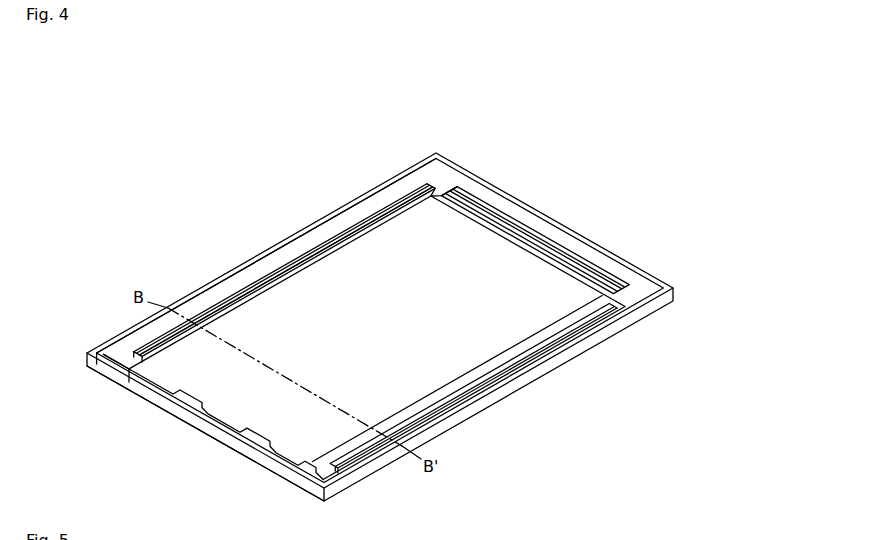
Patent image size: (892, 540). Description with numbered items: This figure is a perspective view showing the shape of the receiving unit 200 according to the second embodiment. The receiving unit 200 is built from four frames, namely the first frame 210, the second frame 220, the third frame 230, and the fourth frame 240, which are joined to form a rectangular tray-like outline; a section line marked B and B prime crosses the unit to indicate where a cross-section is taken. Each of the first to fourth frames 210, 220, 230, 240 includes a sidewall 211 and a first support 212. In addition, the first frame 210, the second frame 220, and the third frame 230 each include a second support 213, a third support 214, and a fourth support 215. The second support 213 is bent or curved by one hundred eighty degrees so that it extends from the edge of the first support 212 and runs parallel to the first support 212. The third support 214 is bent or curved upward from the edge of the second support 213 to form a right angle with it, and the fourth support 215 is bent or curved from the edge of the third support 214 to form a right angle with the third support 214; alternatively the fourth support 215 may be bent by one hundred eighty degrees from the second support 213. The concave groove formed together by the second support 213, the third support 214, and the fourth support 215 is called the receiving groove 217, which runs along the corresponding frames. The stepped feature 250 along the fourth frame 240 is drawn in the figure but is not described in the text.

The receiving unit 200 is at (522, 104).
The first frame 210 is at (295, 211).
The sidewall 211 is at (263, 253).
The first support 212 is at (428, 178).
The second support 213 is at (87, 366).
The third support 214 is at (137, 350).
The fourth support 215 is at (145, 342).
The receiving groove 217 is at (278, 275).
The second frame 220 is at (561, 198).
The third frame 230 is at (517, 405).
The fourth frame 240 is at (190, 451).
The stepped protrusions 250 is at (192, 396).